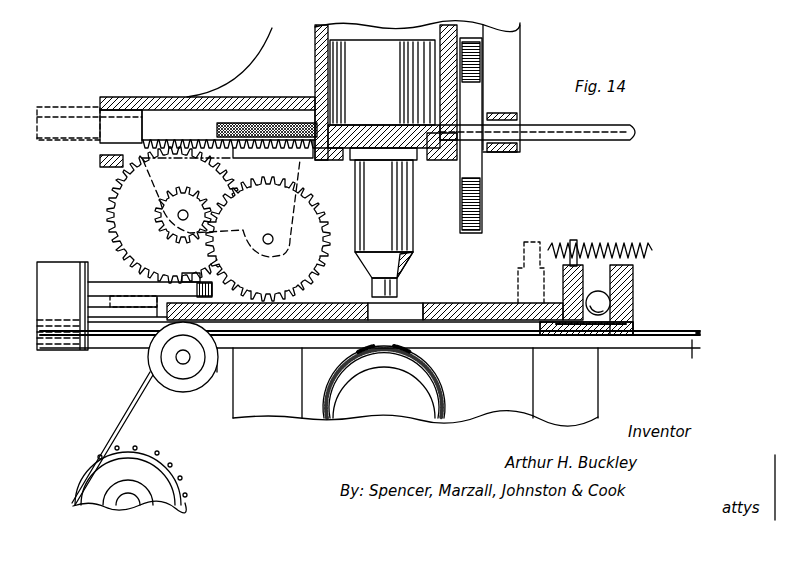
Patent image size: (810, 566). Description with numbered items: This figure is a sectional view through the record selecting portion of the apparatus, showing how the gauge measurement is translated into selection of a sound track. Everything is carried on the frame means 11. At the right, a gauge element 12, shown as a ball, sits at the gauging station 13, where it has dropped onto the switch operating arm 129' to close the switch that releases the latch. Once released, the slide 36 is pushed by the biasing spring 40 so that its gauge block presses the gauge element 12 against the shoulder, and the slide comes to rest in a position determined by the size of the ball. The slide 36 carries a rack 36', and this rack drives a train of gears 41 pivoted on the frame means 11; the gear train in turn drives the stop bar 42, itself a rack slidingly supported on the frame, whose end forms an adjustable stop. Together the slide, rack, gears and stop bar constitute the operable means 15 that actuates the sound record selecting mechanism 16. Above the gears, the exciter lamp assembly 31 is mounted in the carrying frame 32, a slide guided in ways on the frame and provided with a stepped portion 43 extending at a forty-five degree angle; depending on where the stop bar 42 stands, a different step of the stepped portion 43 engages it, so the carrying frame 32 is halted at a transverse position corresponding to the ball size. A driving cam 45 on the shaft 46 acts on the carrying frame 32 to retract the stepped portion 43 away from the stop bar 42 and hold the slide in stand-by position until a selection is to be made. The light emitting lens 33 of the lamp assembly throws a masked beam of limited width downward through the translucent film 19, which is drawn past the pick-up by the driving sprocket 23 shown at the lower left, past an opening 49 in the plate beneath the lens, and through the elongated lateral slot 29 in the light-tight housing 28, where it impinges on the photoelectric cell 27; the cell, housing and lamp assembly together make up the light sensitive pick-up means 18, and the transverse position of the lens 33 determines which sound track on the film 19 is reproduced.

The frame means 11 is at (272, 28).
The gauge element 12 is at (612, 301).
The gauging station 13 is at (592, 282).
The operable means 15 is at (98, 168).
The sound record selecting mechanism 16 is at (314, 64).
The light sensitive pick-up means 18 is at (320, 374).
The translucent film 19 is at (566, 284).
The driving sprocket 23 is at (152, 472).
The photoelectric cell 27 is at (384, 392).
The light-tight casing or housing 28 is at (446, 394).
The elongated lateral slot 29 is at (384, 349).
The exciter lamp assembly 31 is at (382, 82).
The carrying frame 32 is at (411, 160).
The light emitting lens 33 is at (383, 200).
The slide 36 is at (493, 341).
The rack 36' is at (267, 298).
The biasing spring 40 is at (625, 250).
The train of gears 41 is at (106, 213).
The stop bar 42 is at (52, 107).
The stepped portion 43 is at (243, 122).
The driving cam 45 is at (483, 172).
The shaft 46 is at (566, 141).
The plate opening 49 is at (399, 305).
The switch operating arm 129' is at (586, 349).